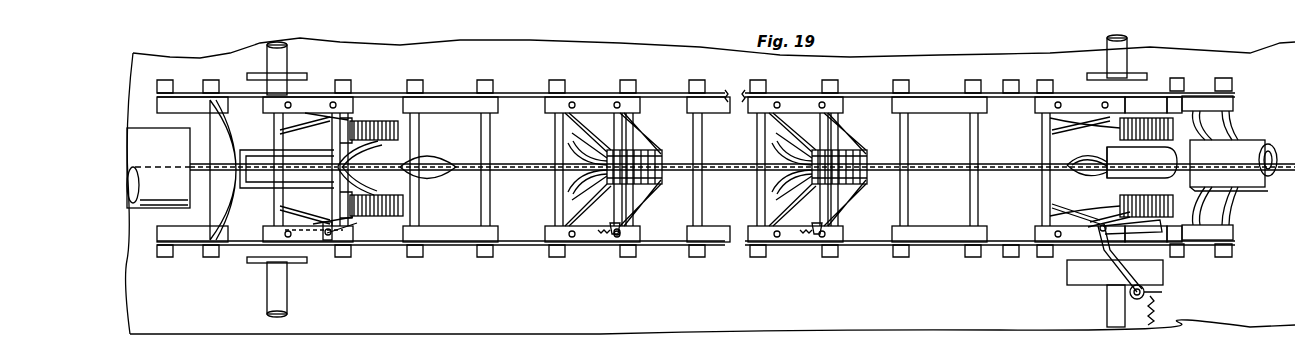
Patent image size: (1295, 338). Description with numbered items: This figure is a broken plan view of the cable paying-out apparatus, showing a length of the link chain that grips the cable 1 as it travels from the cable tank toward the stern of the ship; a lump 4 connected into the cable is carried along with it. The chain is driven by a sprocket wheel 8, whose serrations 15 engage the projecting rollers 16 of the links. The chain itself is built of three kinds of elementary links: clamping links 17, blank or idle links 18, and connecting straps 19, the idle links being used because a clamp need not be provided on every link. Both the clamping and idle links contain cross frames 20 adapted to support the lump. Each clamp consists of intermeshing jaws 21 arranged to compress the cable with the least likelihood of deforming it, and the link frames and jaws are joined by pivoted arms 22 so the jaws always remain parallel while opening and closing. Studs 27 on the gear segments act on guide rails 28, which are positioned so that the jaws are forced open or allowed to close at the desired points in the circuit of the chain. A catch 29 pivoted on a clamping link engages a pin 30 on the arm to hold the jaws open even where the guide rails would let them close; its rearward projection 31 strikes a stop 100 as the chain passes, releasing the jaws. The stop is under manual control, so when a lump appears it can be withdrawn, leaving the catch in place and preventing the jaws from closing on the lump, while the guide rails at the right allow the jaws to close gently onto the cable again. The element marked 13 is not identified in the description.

The cable 1 is at (956, 167).
The lump 4 is at (1142, 162).
The sprocket wheel 8 is at (1028, 249).
The box housing 13 is at (1233, 165).
The serrations 15 is at (236, 257).
The projecting rollers 16 is at (350, 256).
The clamping link 17 is at (303, 97).
The idle link 18 is at (440, 100).
The connecting strap 19 is at (884, 246).
The cross frame 20 is at (756, 190).
The intermeshing jaws 21 is at (403, 208).
The pivoted arms 22 is at (588, 143).
The studs 27 is at (402, 142).
The guide rails 28 is at (432, 153).
The catch 29 is at (326, 223).
The pin 30 is at (598, 216).
The rearward projection 31 is at (1132, 230).
The stop 100 is at (1103, 280).